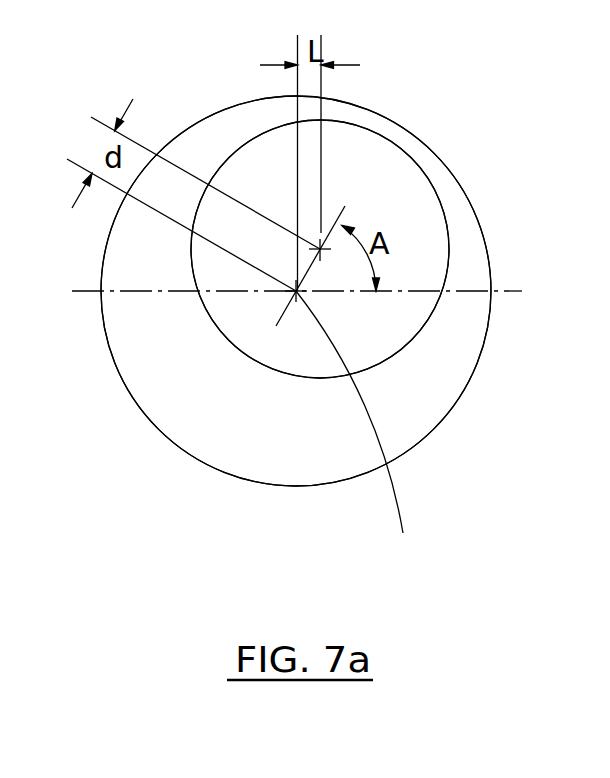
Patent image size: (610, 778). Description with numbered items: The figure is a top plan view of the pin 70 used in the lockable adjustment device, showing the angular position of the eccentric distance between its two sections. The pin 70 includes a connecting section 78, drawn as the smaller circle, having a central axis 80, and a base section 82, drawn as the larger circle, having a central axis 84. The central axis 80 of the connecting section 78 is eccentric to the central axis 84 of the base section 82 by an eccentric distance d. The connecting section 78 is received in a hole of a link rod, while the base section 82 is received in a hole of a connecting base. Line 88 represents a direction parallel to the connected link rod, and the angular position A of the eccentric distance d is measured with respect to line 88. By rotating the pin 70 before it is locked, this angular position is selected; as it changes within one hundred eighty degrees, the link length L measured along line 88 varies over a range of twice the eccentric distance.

The pin 70 is at (157, 428).
The connecting section 78 is at (448, 227).
The central axis 80 is at (398, 198).
The base section 82 is at (432, 433).
The central axis 84 is at (358, 431).
The line 88 is at (508, 297).